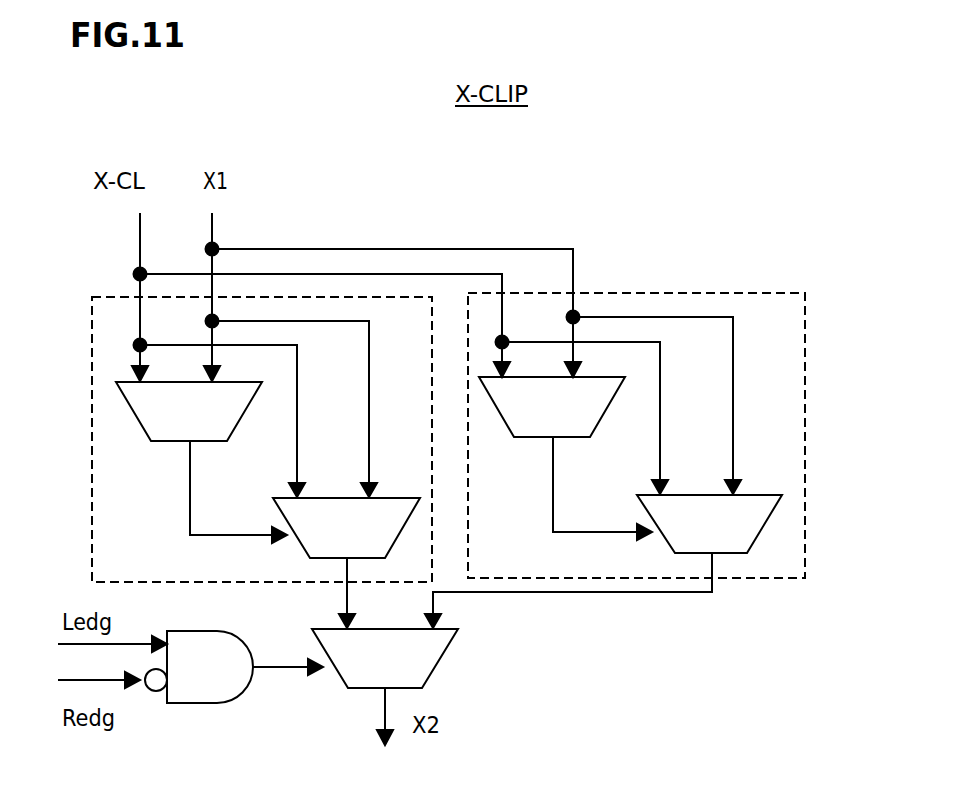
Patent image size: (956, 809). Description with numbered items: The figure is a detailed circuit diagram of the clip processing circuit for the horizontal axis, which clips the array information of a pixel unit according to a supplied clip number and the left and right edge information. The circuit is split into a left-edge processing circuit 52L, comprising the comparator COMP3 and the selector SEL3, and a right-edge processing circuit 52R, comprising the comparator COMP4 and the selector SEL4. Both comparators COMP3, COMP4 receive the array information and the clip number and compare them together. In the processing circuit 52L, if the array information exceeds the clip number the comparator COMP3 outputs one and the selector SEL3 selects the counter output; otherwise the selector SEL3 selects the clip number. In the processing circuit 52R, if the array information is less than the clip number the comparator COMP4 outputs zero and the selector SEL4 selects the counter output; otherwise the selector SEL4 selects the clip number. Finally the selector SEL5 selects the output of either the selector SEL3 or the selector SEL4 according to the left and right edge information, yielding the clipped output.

The processing circuit 52L is at (221, 439).
The processing circuit 52R is at (674, 435).
The comparator COMP3 is at (189, 411).
The comparator COMP4 is at (552, 407).
The selector SEL3 is at (346, 528).
The selector SEL4 is at (709, 524).
The selector SEL5 is at (385, 658).